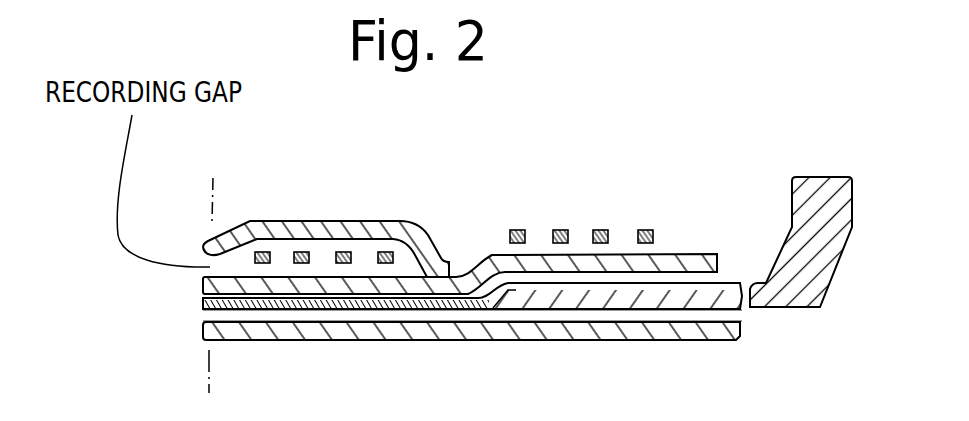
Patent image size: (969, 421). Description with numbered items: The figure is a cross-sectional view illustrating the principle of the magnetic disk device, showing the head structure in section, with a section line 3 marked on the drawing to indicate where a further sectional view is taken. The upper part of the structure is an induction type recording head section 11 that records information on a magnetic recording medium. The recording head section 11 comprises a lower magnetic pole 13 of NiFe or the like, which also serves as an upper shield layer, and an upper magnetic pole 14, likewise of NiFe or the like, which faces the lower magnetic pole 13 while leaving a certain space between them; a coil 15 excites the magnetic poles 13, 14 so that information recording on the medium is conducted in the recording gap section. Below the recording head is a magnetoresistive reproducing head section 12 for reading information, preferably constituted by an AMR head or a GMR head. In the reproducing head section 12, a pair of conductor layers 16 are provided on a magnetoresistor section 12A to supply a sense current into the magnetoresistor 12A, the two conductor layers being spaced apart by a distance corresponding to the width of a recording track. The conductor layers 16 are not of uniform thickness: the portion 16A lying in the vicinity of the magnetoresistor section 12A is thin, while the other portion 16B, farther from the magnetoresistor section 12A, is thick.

The section line 3- 3 is at (213, 175).
The recording head section 11 is at (194, 242).
The reproducing head section 12 is at (190, 315).
The magnetoresistor section 12A is at (272, 309).
The lower magnetic pole 13 is at (487, 257).
The upper magnetic pole 14 is at (312, 220).
The coil 15 is at (345, 253).
The conductor layers 16 is at (693, 300).
The thin portion of conductor layer 16A is at (355, 310).
The thick portion of conductor layer 16B is at (583, 293).